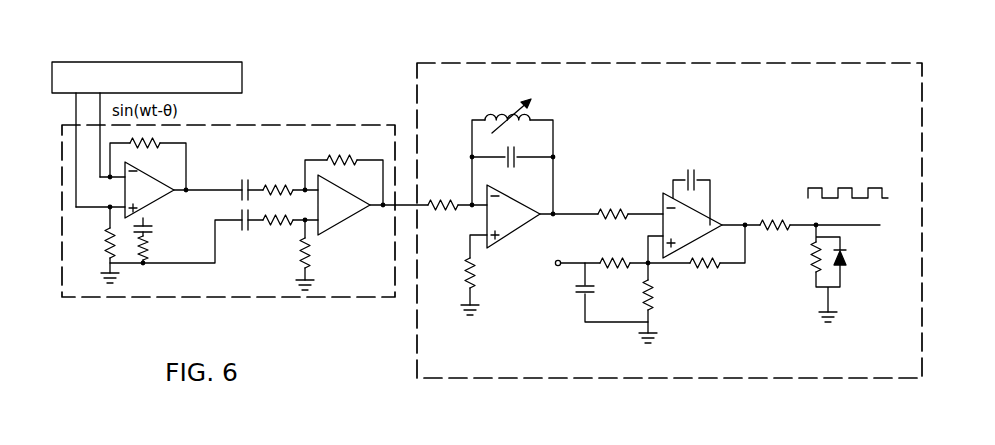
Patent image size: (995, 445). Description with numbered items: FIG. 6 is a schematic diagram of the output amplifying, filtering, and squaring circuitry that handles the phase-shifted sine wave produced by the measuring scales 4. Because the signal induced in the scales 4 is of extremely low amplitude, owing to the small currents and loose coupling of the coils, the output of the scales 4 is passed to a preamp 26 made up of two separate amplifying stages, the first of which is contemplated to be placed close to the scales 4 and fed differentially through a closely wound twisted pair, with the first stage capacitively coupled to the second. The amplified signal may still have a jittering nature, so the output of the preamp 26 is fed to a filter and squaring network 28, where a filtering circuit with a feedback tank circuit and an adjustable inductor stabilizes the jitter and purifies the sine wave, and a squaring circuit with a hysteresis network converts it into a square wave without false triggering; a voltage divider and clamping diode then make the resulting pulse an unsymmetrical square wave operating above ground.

The scales 4 is at (217, 62).
The preamp 26 is at (267, 124).
The filter and squaring network 28 is at (713, 63).